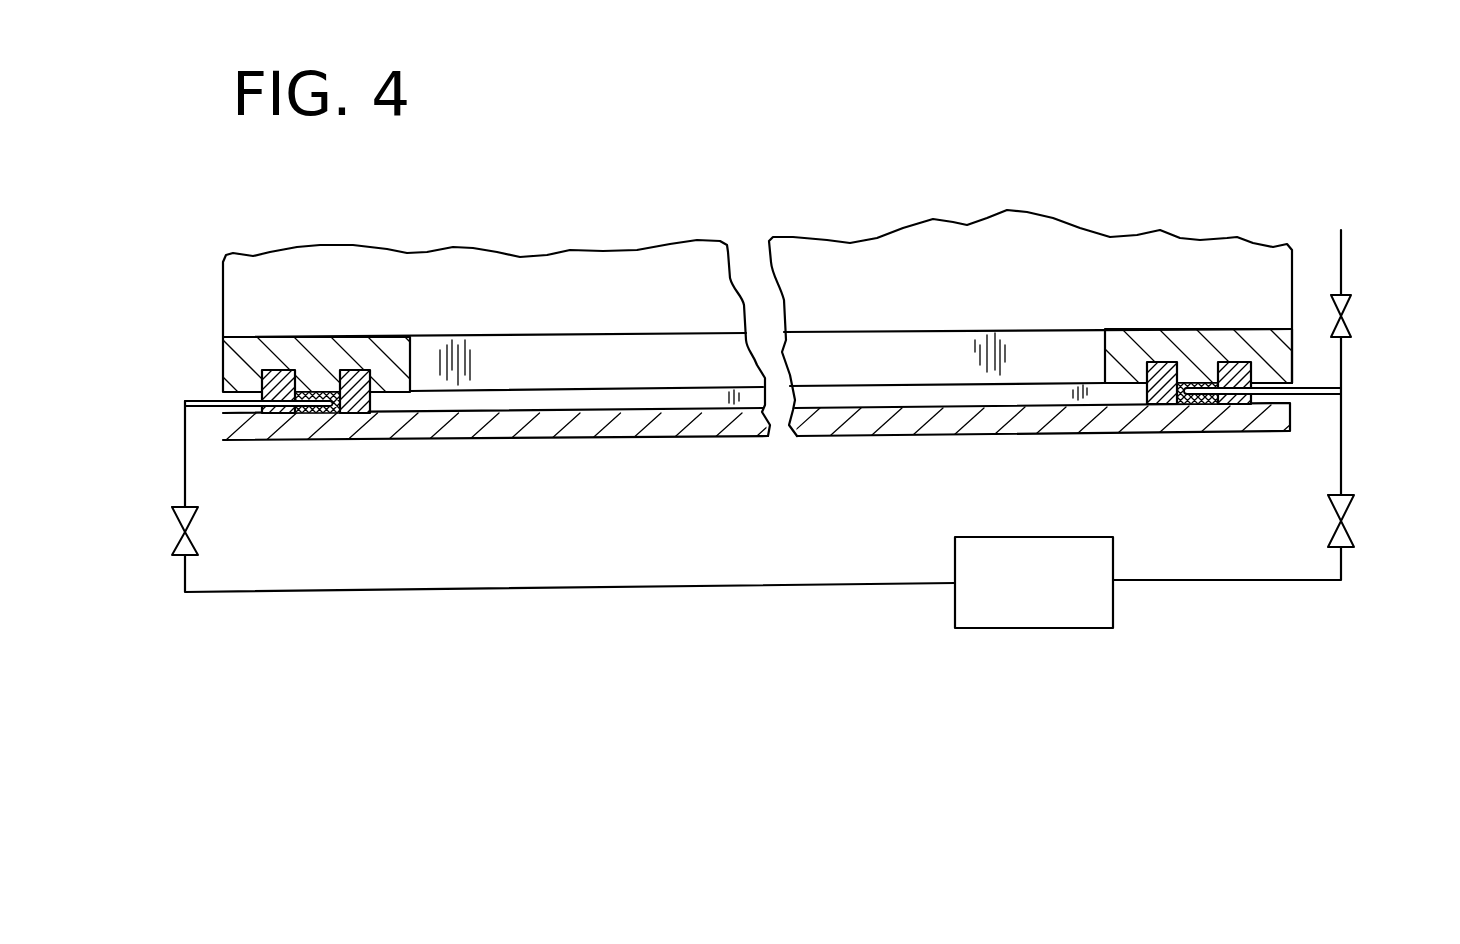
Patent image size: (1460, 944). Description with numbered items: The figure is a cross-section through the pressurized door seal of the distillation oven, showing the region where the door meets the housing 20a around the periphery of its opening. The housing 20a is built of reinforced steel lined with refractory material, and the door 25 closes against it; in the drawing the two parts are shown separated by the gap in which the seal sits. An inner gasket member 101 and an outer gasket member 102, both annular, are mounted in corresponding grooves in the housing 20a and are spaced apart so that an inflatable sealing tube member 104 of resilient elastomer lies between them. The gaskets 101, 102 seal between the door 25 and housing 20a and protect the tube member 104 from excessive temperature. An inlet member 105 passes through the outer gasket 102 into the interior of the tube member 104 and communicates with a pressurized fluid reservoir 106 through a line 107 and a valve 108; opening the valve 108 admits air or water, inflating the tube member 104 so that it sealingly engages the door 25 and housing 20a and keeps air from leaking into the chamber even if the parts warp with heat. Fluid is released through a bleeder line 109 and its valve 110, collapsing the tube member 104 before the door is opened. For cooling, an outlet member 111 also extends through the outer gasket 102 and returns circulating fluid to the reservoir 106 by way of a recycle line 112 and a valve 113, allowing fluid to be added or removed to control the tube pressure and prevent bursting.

The housing 20a is at (283, 347).
The stage 25 is at (653, 422).
The inner gasket member 101 is at (370, 397).
The outer gasket member 102 is at (222, 377).
The inflatable sealing tube member 104 is at (310, 415).
The inlet member 105 is at (1323, 397).
The pressurized fluid reservoir 106 is at (1023, 628).
The line 107 is at (1342, 423).
The valve 108 is at (1345, 522).
The bleeder line 109 is at (1343, 358).
The valve 110 is at (1352, 323).
The outlet member 111 is at (210, 407).
The recycle line 112 is at (185, 487).
The valve 113 is at (197, 543).